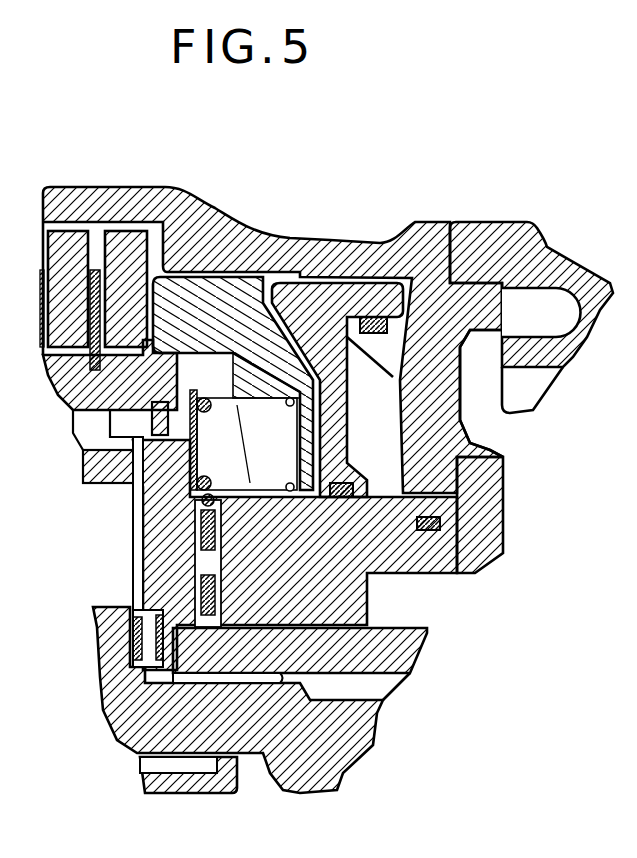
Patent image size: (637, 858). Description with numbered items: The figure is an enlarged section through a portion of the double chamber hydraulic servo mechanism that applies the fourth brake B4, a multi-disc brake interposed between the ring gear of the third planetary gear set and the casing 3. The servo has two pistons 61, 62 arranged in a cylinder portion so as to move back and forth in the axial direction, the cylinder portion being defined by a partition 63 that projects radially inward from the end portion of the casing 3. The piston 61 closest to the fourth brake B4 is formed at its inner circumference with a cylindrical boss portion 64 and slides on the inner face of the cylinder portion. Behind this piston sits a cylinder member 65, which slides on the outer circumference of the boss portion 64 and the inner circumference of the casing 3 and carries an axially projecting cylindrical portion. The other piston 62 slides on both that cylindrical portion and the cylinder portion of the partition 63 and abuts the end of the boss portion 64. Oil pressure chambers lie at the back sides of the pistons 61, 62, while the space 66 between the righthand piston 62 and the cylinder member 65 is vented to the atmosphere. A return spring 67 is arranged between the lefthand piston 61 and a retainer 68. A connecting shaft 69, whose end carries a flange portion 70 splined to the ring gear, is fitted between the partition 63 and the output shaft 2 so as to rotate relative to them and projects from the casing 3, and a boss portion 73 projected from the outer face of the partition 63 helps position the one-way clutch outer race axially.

The output shaft 2 is at (305, 745).
The casing 3 is at (77, 190).
The fourth brake B4 is at (127, 225).
The piston 61 is at (200, 303).
The piston 62 is at (440, 285).
The partition 63 is at (487, 497).
The boss portion 64 is at (400, 573).
The cylinder member 65 is at (300, 297).
The space 66 is at (384, 430).
The return spring 67 is at (247, 483).
The retainer 68 is at (197, 455).
The connecting shaft 69 is at (367, 650).
The flange portion 70 is at (93, 603).
The boss portion 73 is at (497, 452).